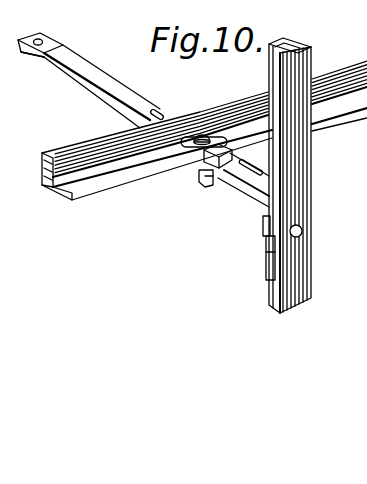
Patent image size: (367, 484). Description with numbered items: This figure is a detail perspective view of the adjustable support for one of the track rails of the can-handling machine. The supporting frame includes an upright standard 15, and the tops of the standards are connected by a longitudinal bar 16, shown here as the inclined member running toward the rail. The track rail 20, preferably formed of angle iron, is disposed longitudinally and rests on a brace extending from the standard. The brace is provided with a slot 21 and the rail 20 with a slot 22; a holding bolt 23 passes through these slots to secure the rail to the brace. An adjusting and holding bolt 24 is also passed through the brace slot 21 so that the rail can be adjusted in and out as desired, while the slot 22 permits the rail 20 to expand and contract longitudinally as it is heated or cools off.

The standard 15 is at (302, 200).
The longitudinal bar 16 is at (102, 80).
The track rail 20 is at (106, 184).
The brace slot 21 is at (247, 186).
The rail slot 22 is at (222, 137).
The holding bolt 23 is at (200, 136).
The adjusting and holding bolt 24 is at (210, 183).